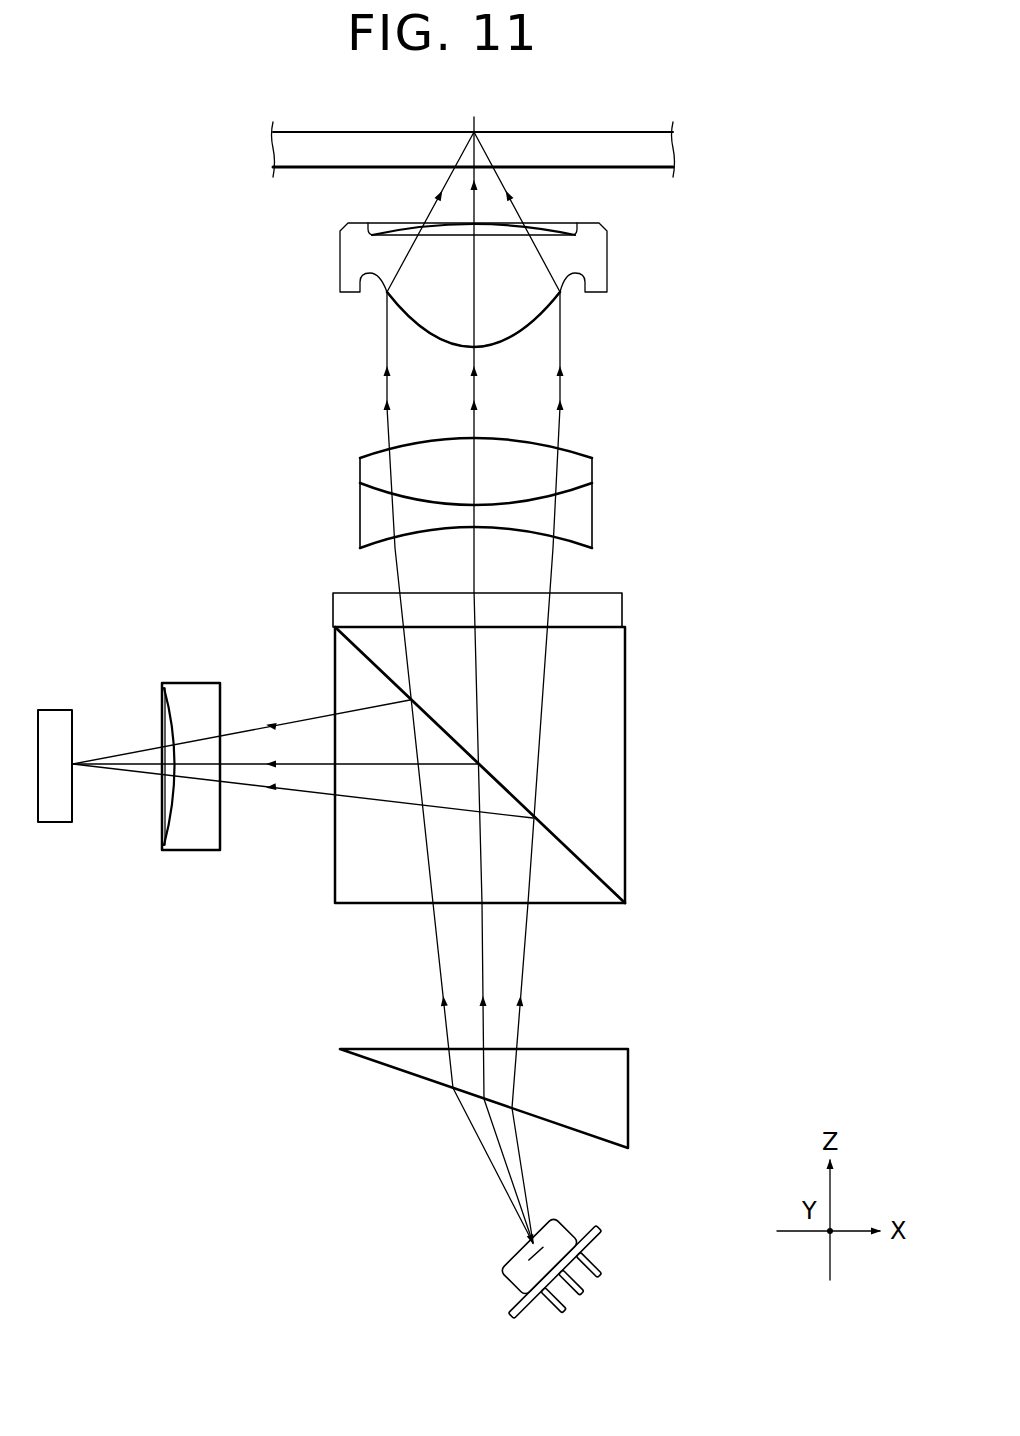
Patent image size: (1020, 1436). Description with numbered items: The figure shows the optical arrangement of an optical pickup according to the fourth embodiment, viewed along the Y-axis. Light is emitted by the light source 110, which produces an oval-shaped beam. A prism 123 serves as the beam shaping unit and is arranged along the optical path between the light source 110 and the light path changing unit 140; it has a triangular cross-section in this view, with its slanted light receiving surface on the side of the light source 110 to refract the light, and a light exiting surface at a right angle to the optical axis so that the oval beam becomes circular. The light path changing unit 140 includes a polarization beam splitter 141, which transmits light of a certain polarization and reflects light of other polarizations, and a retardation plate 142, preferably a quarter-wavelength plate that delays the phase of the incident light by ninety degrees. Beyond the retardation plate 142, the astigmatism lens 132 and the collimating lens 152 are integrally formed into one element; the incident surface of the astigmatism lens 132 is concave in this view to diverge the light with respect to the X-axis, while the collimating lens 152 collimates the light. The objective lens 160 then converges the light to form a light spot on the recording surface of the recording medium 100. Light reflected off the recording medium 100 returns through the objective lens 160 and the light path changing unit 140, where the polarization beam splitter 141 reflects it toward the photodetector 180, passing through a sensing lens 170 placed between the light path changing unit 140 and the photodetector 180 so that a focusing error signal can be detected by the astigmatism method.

The recording medium 100 is at (677, 149).
The objective lens 160 is at (606, 254).
The collimating lens 152 is at (583, 470).
The astigmatism lens 132 is at (583, 537).
The light path changing unit 140 is at (552, 746).
The retardation plate 142 is at (640, 608).
The polarization beam splitter 141 is at (615, 826).
The sensing lens 170 is at (192, 846).
The photodetector 180 is at (57, 810).
The prism 123 is at (623, 1122).
The light source 110 is at (566, 1237).